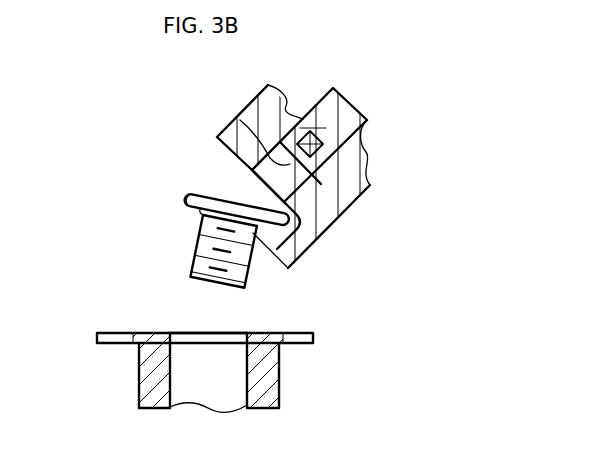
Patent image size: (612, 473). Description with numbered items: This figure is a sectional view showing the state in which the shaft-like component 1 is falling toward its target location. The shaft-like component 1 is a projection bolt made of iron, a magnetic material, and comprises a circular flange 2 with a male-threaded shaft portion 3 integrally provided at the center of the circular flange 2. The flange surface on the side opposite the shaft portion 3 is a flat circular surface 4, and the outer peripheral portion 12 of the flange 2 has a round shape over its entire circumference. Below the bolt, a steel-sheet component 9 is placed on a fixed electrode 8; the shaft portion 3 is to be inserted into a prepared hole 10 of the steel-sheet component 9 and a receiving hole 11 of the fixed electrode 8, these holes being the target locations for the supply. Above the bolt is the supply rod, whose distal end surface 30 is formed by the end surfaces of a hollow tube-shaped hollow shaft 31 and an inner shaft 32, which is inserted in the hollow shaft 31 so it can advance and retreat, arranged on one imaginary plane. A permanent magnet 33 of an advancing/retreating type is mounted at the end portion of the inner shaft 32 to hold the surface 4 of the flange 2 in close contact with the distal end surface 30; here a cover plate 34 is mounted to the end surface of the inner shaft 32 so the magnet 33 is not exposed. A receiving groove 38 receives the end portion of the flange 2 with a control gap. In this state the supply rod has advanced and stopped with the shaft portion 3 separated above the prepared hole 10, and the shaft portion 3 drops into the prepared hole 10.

The shaft-like component 1 is at (205, 234).
The circular flange 2 is at (188, 211).
The shaft portion 3 is at (247, 277).
The surface 4 is at (213, 192).
The fixed electrode 8 is at (140, 372).
The steel-sheet component 9 is at (113, 333).
The prepared hole 10 is at (188, 337).
The receiving hole 11 is at (192, 388).
The outer peripheral portion 12 is at (182, 197).
The distal end surface 30 is at (226, 147).
The hollow shaft 31 is at (365, 188).
The inner shaft 32 is at (318, 100).
The magnet 33 is at (322, 134).
The cover plate 34 is at (240, 120).
The receiving groove 38 is at (292, 228).